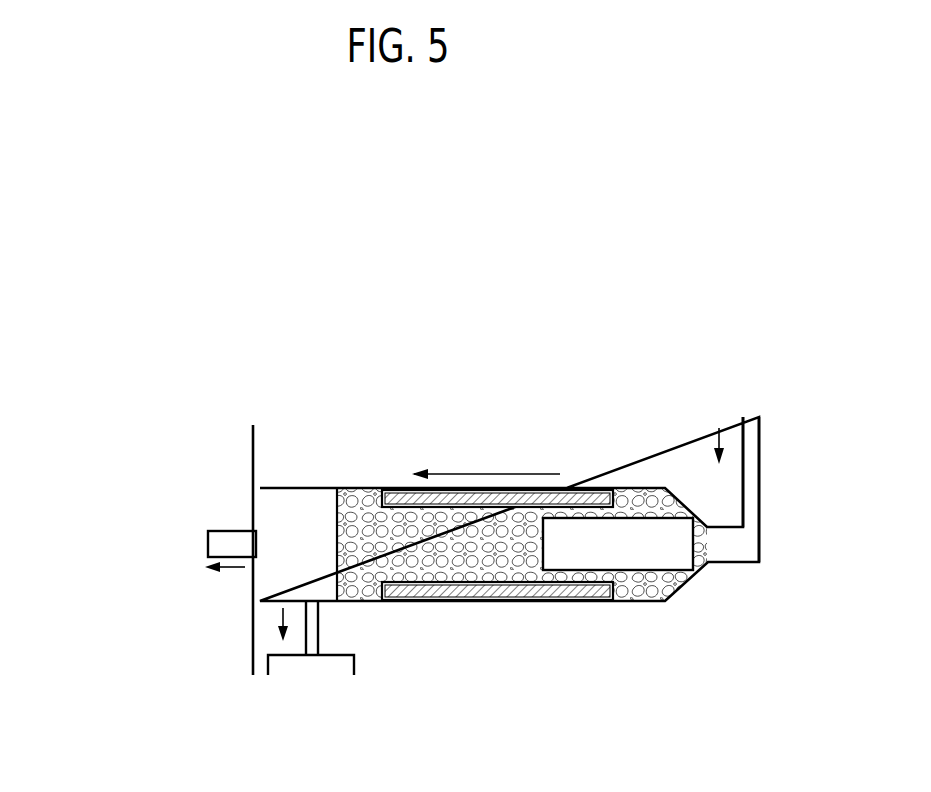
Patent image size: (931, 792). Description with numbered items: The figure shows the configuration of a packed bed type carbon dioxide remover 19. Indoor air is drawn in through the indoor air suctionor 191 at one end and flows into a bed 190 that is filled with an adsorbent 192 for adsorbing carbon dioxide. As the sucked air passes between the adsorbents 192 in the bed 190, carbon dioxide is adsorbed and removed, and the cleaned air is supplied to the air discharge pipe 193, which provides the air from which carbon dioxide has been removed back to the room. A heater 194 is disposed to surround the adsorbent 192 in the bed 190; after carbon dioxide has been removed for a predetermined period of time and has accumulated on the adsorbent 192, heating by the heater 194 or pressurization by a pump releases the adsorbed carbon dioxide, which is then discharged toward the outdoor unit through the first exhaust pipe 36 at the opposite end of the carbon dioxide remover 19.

The carbon dioxide remover 19 is at (391, 407).
The bed 190 is at (632, 487).
The indoor air suctionor 191 is at (760, 475).
The adsorbent 192 is at (481, 518).
The air discharge pipe 193 is at (318, 632).
The heater 194 is at (535, 498).
The first exhaust pipe 36 is at (216, 530).